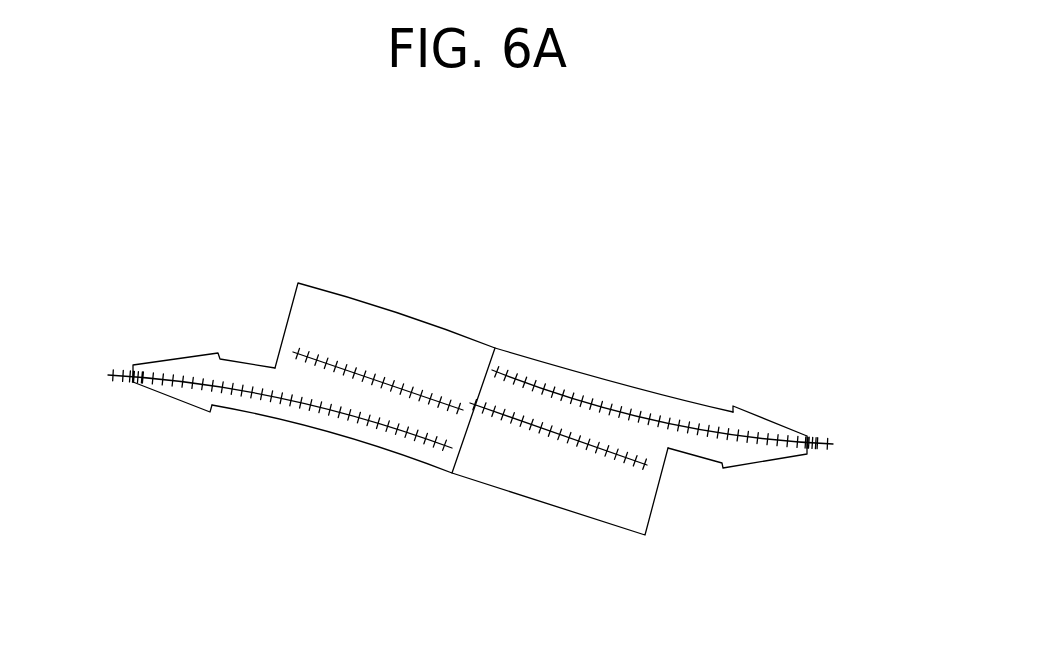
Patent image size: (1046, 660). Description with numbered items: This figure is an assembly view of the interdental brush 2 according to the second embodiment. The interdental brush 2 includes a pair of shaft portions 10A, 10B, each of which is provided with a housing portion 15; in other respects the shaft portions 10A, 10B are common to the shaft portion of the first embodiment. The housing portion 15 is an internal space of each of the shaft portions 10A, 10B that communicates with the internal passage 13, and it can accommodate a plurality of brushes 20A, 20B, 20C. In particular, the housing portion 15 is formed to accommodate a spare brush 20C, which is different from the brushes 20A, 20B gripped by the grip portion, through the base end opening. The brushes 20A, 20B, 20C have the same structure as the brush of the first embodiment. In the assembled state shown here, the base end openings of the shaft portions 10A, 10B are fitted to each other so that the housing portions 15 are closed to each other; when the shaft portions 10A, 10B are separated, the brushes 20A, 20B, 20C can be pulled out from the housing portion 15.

The interdental brush 2 is at (690, 288).
The shaft portion 10A is at (354, 262).
The shaft portion 10B is at (587, 328).
The internal passage 13 is at (236, 400).
The housing portion 15 is at (385, 350).
The brush 20A is at (340, 417).
The brush 20B is at (768, 440).
The spare brush 20C is at (632, 467).